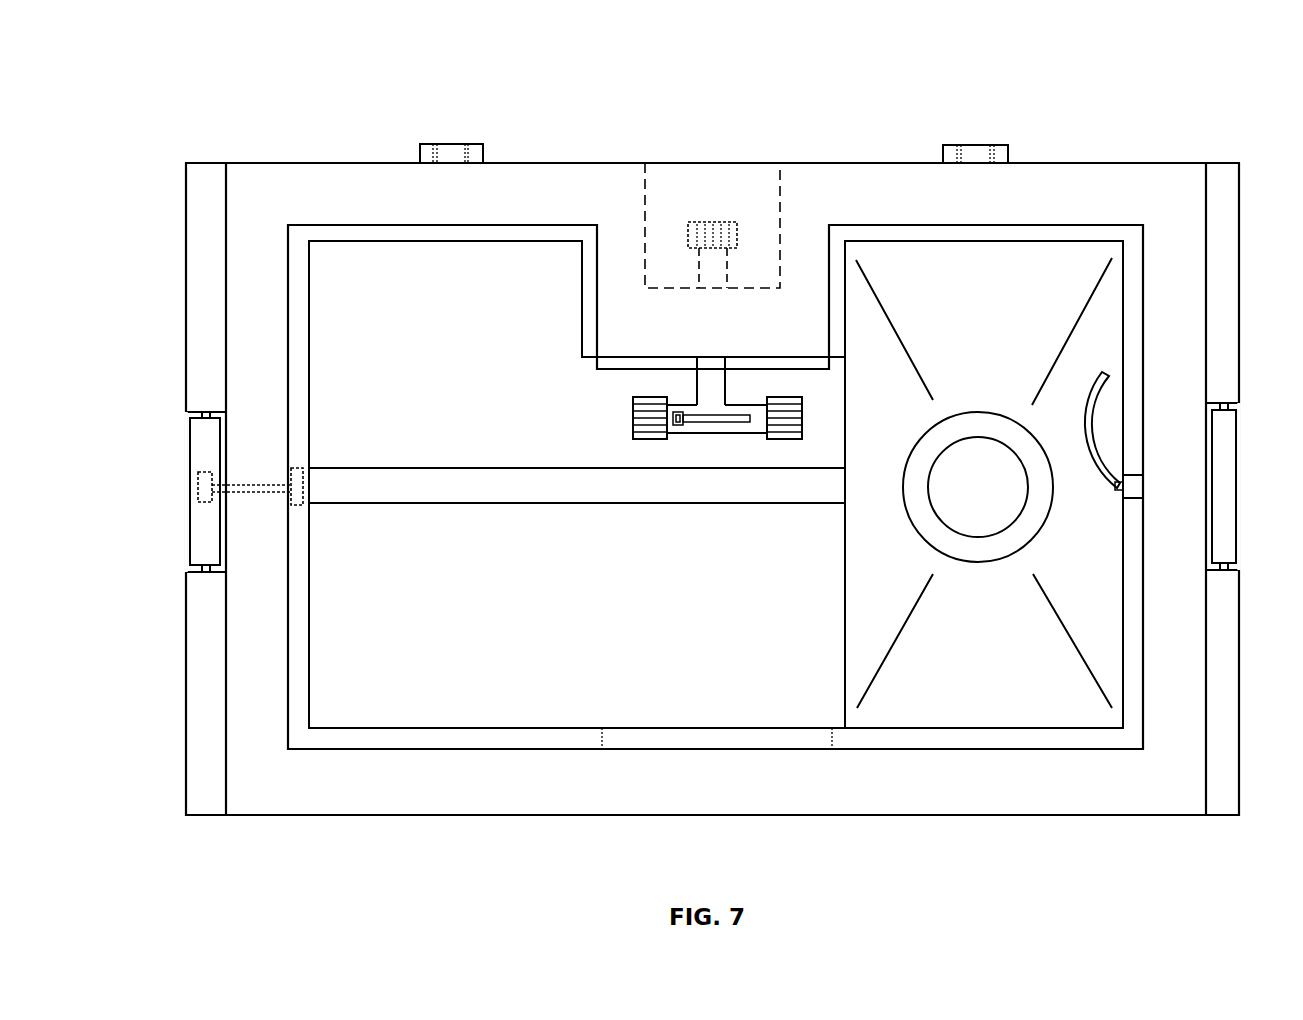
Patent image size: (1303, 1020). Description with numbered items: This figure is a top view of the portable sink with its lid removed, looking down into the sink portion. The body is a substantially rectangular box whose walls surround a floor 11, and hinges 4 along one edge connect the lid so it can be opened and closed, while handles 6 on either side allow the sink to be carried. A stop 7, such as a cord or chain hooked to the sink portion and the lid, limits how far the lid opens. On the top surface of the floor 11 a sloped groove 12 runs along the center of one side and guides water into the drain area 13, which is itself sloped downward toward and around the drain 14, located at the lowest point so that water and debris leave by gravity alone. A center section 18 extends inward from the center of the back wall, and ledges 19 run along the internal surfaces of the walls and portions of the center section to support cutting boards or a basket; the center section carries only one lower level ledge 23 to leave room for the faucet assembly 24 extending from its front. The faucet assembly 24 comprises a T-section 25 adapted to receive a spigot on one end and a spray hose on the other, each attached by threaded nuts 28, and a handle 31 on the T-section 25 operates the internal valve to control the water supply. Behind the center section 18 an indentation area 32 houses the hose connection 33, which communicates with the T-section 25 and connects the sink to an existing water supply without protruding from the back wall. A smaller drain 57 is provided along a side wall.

The hinges 4 is at (458, 140).
The handles 6 is at (190, 432).
The stop 7 is at (1097, 473).
The floor 11 is at (560, 633).
The groove 12 is at (391, 466).
The drain area 13 is at (1008, 380).
The drain 14 is at (978, 487).
The center section 18 is at (628, 232).
The ledges 19 is at (575, 298).
The lower level ledge 23 is at (692, 284).
The faucet assembly 24 is at (678, 452).
The T-section 25 is at (728, 388).
The threaded nuts 28 is at (632, 405).
The handle 31 is at (706, 427).
The indentation area 32 is at (676, 190).
The hose connection 33 is at (720, 220).
The smaller drain 57 is at (205, 490).